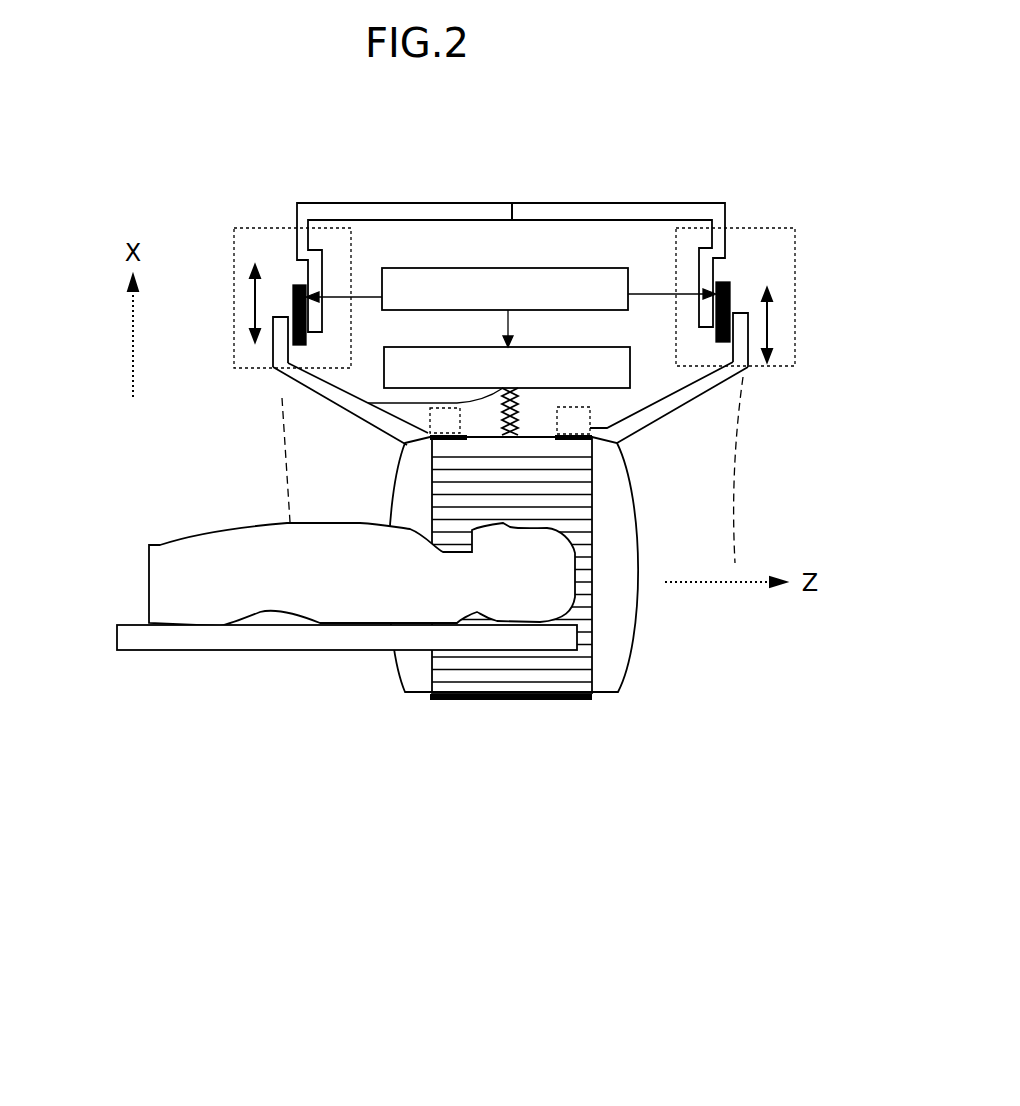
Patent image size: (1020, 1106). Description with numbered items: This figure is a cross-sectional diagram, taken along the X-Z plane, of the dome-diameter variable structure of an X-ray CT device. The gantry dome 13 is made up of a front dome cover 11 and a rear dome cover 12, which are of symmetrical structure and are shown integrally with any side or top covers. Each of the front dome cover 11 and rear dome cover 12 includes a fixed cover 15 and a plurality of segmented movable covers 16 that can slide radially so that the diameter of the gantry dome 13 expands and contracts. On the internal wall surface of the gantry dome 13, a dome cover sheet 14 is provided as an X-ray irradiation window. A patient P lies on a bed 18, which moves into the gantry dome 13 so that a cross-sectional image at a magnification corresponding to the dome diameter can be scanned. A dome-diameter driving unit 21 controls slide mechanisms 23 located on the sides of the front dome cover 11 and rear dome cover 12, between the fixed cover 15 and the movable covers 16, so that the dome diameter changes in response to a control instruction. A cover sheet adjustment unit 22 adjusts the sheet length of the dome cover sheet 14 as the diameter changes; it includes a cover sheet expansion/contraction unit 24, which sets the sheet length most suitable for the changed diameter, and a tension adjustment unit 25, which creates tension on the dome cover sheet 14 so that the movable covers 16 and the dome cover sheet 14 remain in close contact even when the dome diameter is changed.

The front dome cover 11 is at (377, 203).
The rear dome cover 12 is at (620, 203).
The fixed cover 15 is at (511, 242).
The gantry dome 13 is at (546, 567).
The dome cover sheet 14 is at (593, 610).
The movable cover 16 is at (280, 392).
The bed 18 is at (118, 626).
The dome-diameter driving unit 21 is at (628, 268).
The cover sheet adjustment unit 22 is at (630, 347).
The slide mechanism 23 is at (293, 287).
The cover sheet expansion/contraction unit 24 is at (345, 403).
The tension adjustment unit 25 is at (430, 422).
The patient P is at (252, 525).